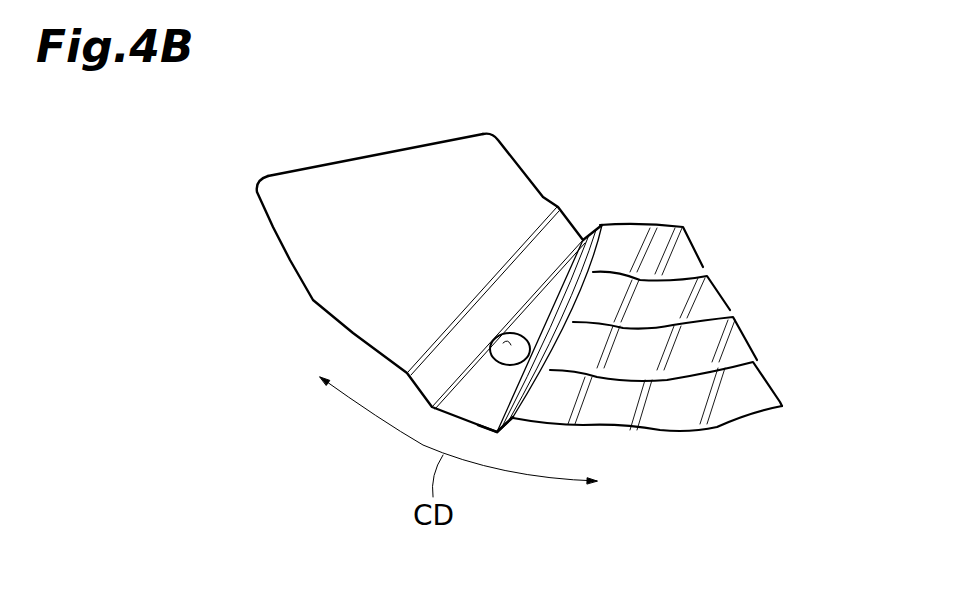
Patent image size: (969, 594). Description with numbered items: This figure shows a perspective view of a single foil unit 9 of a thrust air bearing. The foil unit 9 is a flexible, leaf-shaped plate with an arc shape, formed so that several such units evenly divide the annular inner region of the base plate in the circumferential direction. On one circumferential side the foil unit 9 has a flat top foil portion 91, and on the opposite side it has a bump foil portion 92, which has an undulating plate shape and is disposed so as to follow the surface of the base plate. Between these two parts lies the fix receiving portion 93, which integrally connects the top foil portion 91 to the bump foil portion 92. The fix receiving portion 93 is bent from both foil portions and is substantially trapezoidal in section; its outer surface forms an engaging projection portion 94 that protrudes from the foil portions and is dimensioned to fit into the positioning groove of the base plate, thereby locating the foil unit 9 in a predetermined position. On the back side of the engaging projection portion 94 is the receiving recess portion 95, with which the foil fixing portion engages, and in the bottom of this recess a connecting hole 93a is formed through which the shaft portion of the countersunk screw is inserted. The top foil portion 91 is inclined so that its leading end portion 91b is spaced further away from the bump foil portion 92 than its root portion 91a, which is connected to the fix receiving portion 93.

The foil unit 9 is at (369, 157).
The top foil portion 91 is at (278, 241).
The root portion 91a is at (492, 277).
The leading end portion 91b is at (447, 141).
The bump foil portion 92 is at (680, 428).
The fix receiving portion 93 is at (569, 219).
The connecting hole 93a is at (503, 343).
The engaging projection portion 94 is at (482, 430).
The receiving recess portion 95 is at (530, 262).